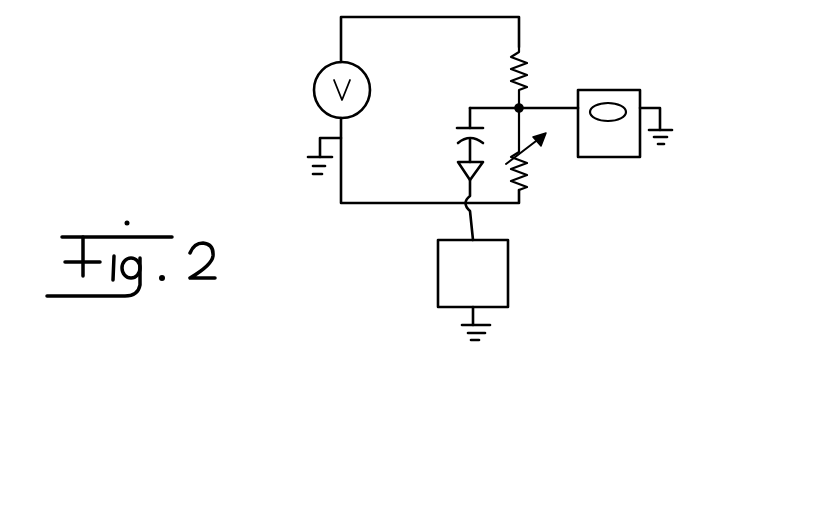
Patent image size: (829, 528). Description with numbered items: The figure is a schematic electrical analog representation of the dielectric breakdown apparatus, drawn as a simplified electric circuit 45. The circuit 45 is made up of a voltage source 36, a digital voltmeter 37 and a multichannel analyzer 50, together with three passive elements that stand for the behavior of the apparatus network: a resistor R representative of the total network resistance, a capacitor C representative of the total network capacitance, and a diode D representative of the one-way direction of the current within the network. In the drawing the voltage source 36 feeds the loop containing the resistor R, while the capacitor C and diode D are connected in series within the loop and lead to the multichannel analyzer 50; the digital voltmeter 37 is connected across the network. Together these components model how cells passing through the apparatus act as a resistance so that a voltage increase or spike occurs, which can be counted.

The voltage source 36 is at (312, 83).
The digital voltmeter 37 is at (622, 158).
The simplified electric circuit 45 is at (385, 211).
The multichannel analyzer 50 is at (508, 284).
The resistor R is at (527, 72).
The capacitor C is at (467, 124).
The diode D is at (463, 171).